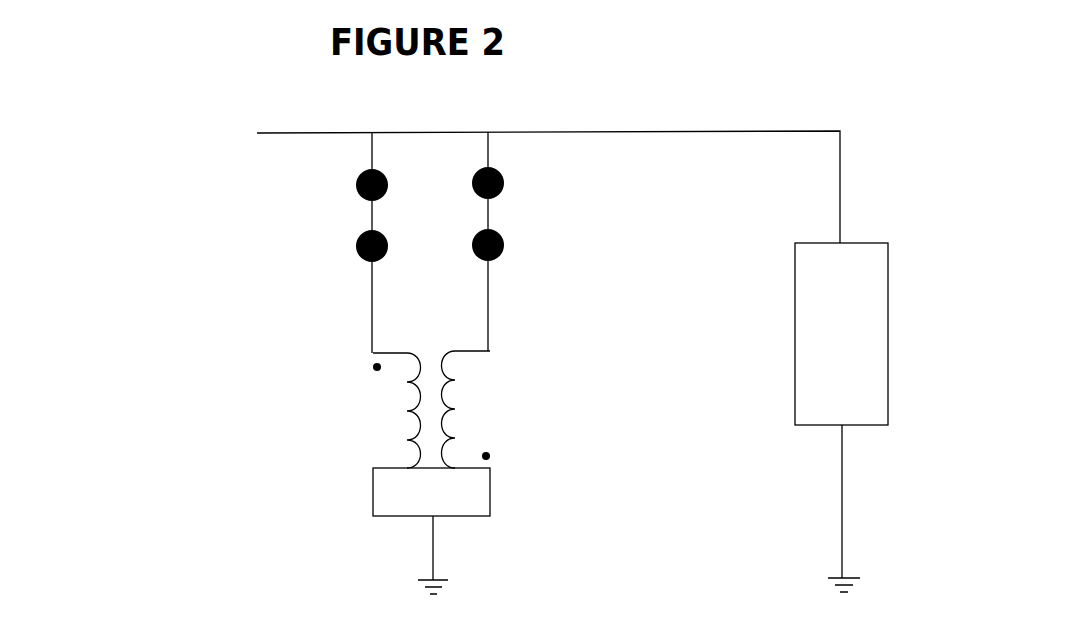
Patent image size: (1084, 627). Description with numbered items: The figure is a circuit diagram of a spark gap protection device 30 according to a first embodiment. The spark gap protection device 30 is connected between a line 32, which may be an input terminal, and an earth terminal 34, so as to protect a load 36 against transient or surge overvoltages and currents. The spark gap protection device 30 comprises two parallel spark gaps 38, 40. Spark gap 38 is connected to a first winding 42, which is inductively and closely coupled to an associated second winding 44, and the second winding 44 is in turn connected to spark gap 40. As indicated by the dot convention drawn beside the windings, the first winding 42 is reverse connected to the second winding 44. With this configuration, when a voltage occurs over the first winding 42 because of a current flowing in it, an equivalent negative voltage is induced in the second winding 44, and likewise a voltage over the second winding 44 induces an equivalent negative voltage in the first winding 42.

The spark gap protection device 30 is at (247, 211).
The line 32 is at (638, 131).
The earth terminal 34 is at (417, 581).
The load 36 is at (795, 334).
The spark gap 38 is at (385, 243).
The spark gap 40 is at (501, 241).
The first winding 42 is at (346, 407).
The second winding 44 is at (504, 409).